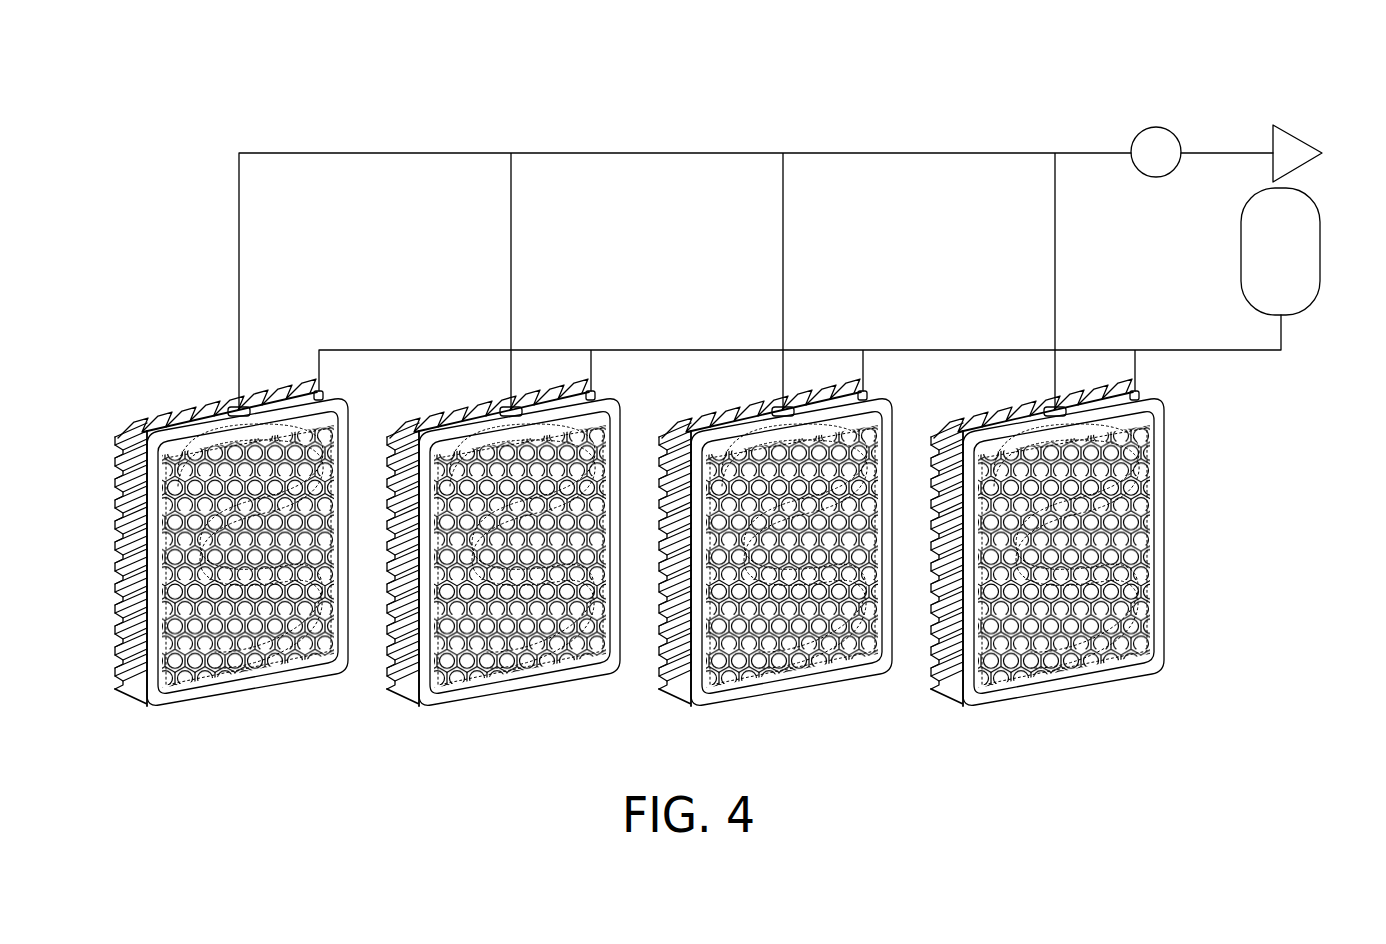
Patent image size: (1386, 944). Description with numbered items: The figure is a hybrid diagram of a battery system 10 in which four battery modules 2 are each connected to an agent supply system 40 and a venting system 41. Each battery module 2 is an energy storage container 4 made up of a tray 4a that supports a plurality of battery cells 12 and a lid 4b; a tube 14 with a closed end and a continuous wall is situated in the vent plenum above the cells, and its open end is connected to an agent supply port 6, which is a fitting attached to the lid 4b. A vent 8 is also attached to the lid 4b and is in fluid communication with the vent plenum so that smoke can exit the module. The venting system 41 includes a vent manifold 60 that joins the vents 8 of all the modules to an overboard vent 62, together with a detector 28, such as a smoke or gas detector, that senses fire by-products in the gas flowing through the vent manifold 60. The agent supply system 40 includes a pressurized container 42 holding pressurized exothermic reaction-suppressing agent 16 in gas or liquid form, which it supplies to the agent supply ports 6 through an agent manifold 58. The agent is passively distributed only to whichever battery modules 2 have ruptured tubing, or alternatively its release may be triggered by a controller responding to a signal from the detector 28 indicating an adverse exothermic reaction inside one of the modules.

The battery module 2 is at (236, 700).
The energy storage container 4 is at (148, 393).
The tray 4a is at (128, 682).
The lid 4b is at (207, 704).
The agent supply port 6 is at (316, 391).
The vent 8 is at (232, 407).
The battery system 10 is at (600, 104).
The battery cells 12 is at (327, 533).
The tube 14 is at (310, 507).
The pressurized exothermic reaction-suppressing agent 16 is at (1266, 264).
The detector 28 is at (1159, 127).
The agent supply system 40 is at (1197, 298).
The venting system 41 is at (1113, 112).
The pressurized container 42 is at (1310, 251).
The agent manifold 58 is at (645, 345).
The vent manifold 60 is at (872, 150).
The overboard vent 62 is at (1300, 140).